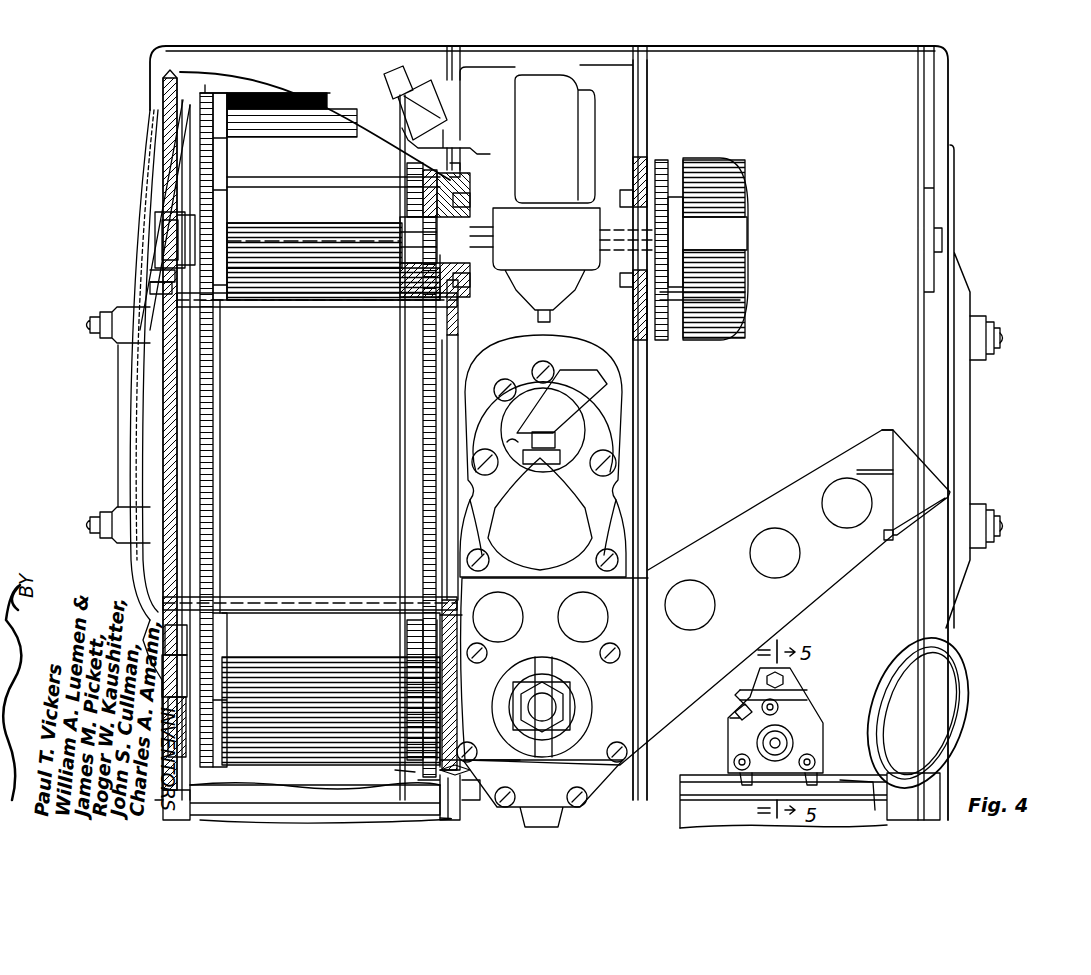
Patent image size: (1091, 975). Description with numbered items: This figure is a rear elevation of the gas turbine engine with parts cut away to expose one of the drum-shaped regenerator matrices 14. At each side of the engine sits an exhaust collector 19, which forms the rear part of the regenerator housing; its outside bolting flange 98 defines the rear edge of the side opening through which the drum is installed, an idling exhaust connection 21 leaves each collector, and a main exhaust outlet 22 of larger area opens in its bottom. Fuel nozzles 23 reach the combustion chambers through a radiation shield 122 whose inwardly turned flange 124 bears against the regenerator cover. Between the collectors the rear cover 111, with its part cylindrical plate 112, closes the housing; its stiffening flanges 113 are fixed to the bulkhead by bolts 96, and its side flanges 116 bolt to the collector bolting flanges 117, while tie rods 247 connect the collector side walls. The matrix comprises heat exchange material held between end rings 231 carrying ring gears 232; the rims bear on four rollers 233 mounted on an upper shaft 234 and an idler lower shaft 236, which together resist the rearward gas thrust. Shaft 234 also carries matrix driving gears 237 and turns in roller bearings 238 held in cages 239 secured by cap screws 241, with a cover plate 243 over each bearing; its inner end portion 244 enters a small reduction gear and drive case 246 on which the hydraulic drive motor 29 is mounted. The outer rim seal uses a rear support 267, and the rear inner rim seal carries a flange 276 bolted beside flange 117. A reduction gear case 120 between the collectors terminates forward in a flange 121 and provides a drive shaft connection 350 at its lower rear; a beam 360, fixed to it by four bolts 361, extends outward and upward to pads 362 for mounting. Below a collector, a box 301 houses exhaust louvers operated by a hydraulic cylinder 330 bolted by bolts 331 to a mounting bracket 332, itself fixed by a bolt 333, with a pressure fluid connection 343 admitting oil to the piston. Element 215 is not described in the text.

The regenerator matrix 14 is at (305, 128).
The exhaust collector 19 is at (925, 145).
The exhaust connection 21 is at (965, 700).
The main exhaust outlet 22 is at (875, 810).
The fuel nozzle 23 is at (1002, 340).
The hydraulic drive motor 29 is at (486, 95).
The bolts 96 is at (478, 765).
The outside bolting flange 98 is at (163, 97).
The rear cover 111 is at (603, 70).
The part cylindrical plate 112 is at (635, 107).
The stiffening flange 113 is at (590, 805).
The side flange 116 is at (462, 312).
The bolting flange 117 is at (378, 595).
The reduction gear case 120 is at (500, 365).
The flange 121 is at (560, 360).
The radiation shield 122 is at (140, 548).
The inwardly turned flange 124 is at (160, 60).
The clip 215 is at (415, 775).
The end ring 231 is at (205, 790).
The ring gear 232 is at (215, 95).
The roller 233 is at (228, 262).
The upper shaft 234 is at (290, 222).
The lower shaft 236 is at (305, 640).
The matrix driving gear 237 is at (214, 186).
The roller bearing 238 is at (155, 222).
The cage 239 is at (155, 276).
The cap screw 241 is at (150, 288).
The cover plate 243 is at (155, 240).
The inner end portion 244 is at (493, 250).
The reduction gear and drive case 246 is at (578, 185).
The tie rod 247 is at (340, 300).
The rear support 267 is at (182, 140).
The flange 276 is at (447, 805).
The shield or box 301 is at (318, 810).
The hydraulic cylinder 330 is at (793, 730).
The bolt 331 is at (815, 760).
The mounting bracket 332 is at (728, 742).
The bolt 333 is at (785, 680).
The pressure fluid connection 343 is at (735, 712).
The drive shaft connection 350 is at (575, 680).
The beam 360 is at (815, 484).
The bolt 361 is at (612, 646).
The pad 362 is at (905, 440).